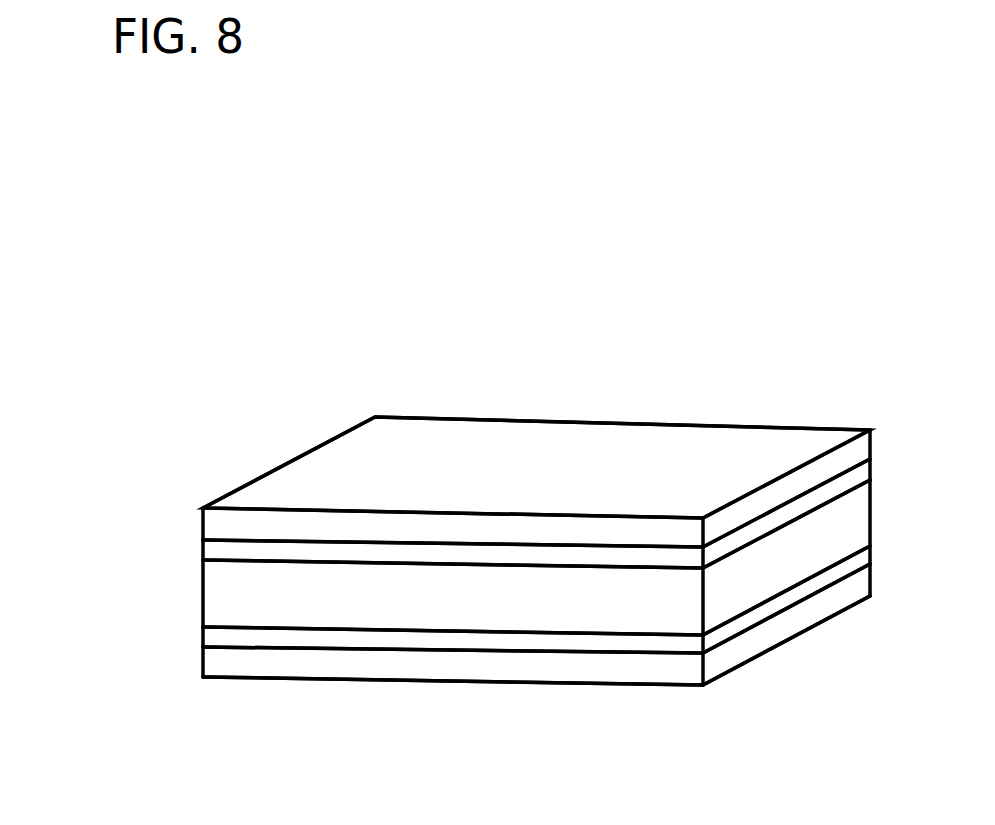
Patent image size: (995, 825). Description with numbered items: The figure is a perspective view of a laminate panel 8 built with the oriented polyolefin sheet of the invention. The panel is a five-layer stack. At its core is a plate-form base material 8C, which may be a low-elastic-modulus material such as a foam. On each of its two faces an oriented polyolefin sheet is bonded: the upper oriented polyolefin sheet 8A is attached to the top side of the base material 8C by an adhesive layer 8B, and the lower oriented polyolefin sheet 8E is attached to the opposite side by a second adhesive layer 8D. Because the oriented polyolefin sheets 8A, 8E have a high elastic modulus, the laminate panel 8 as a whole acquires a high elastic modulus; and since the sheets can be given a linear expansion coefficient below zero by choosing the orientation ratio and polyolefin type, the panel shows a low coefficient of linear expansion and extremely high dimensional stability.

The laminate panel 8 is at (320, 268).
The oriented polyolefin sheet 8A is at (695, 445).
The adhesive layer 8B is at (273, 550).
The plate-form base material 8C is at (627, 610).
The adhesive layer 8D is at (413, 638).
The oriented polyolefin sheet 8E is at (263, 660).